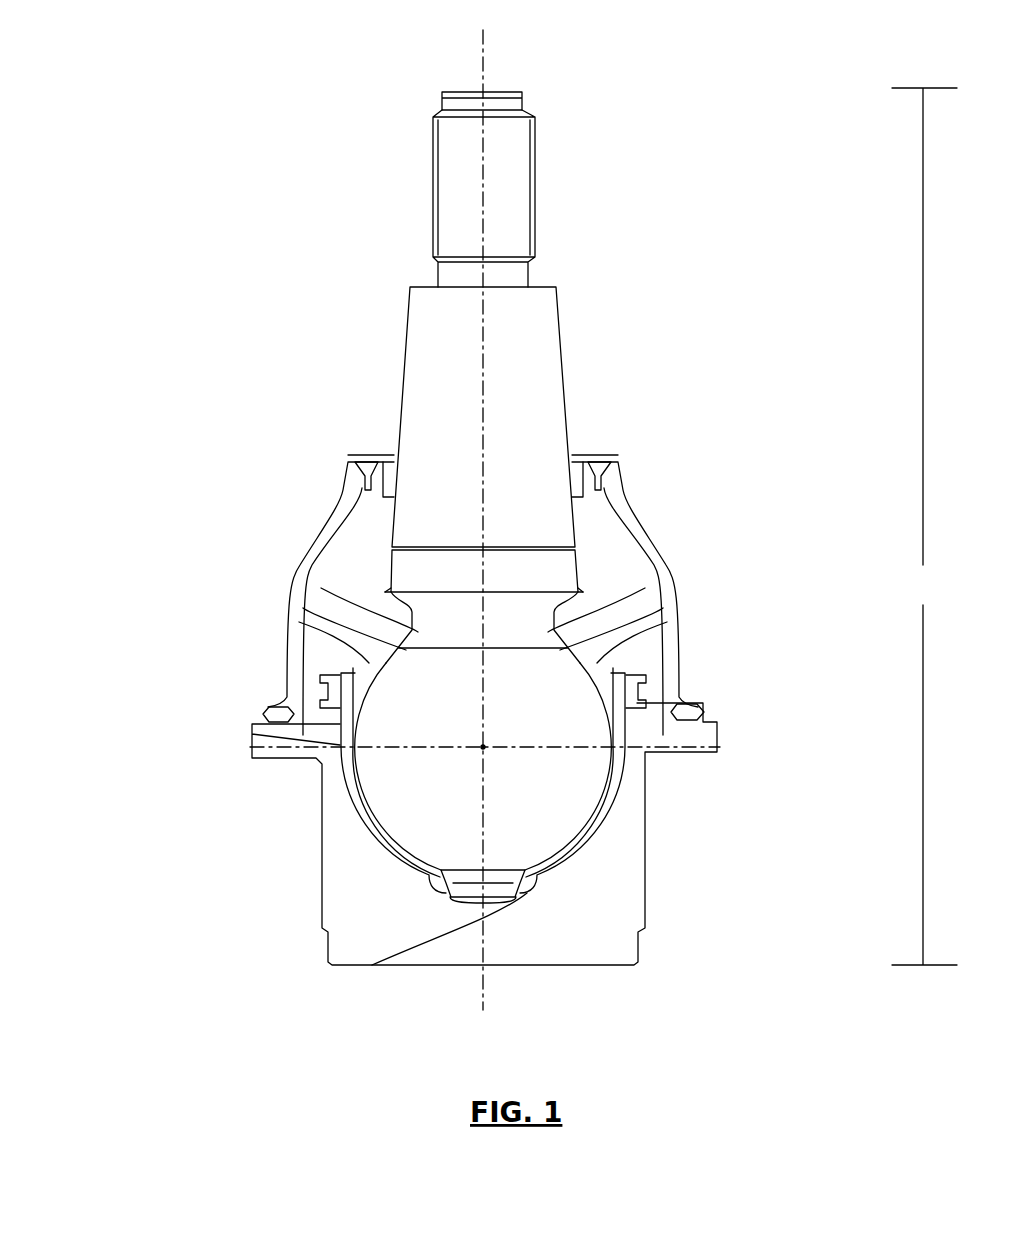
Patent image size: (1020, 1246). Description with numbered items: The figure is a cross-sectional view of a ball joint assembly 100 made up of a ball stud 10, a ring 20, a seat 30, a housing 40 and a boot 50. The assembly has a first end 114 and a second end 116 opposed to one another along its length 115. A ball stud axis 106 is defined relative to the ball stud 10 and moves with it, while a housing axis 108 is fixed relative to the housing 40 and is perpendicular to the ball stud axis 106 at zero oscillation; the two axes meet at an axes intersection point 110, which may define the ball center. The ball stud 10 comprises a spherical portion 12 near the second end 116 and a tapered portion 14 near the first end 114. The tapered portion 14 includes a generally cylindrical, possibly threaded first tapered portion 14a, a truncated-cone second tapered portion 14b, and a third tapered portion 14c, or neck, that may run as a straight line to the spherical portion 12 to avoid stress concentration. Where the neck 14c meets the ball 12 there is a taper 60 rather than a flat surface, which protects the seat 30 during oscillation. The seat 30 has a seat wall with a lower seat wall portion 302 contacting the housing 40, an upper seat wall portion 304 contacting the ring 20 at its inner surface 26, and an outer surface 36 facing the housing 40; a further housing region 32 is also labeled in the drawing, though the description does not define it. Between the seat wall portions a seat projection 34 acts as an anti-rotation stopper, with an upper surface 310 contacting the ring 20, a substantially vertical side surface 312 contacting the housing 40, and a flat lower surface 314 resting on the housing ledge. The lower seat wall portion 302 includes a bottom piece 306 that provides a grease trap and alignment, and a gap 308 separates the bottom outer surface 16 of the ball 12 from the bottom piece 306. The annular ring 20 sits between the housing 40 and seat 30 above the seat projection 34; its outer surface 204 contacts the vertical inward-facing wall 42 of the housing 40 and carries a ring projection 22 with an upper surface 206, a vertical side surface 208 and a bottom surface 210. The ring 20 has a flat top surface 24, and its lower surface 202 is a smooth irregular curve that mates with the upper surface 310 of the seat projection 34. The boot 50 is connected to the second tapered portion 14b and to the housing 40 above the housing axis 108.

The ball joint assembly 100 is at (200, 238).
The ball stud 10 is at (390, 407).
The spherical portion 12 is at (593, 640).
The tapered portion 14 is at (370, 602).
The first tapered portion 14a is at (547, 187).
The second tapered portion 14b is at (567, 367).
The third tapered portion 14c is at (575, 590).
The bottom outer surface 16 is at (613, 808).
The ring 20 is at (367, 660).
The ring projection 22 is at (817, 628).
The top surface 24 is at (603, 660).
The inner surface 26 is at (705, 742).
The seat 30 is at (407, 870).
The housing outer wall 32 is at (647, 900).
The seat projection 34 is at (100, 720).
The outer surface 36 is at (250, 753).
The housing 40 is at (355, 925).
The vertical inward-facing wall 42 is at (300, 690).
The boot 50 is at (622, 470).
The taper 60 is at (600, 600).
The ball stud axis 106 is at (486, 58).
The housing axis 108 is at (560, 745).
The axes intersection point 110 is at (498, 758).
The first end 114 is at (415, 52).
The length 115 is at (924, 526).
The second end 116 is at (424, 1028).
The lower surface 202 is at (653, 760).
The outer surface 204 is at (387, 626).
The upper surface 206 is at (682, 674).
The vertical side surface 208 is at (683, 688).
The bottom surface 210 is at (708, 708).
The lower seat wall portion 302 is at (369, 827).
The upper seat wall portion 304 is at (355, 713).
The bottom piece 306 is at (385, 966).
The gap 308 is at (500, 880).
The upper surface 310 is at (258, 712).
The side surface 312 is at (262, 716).
The lower surface 314 is at (252, 728).